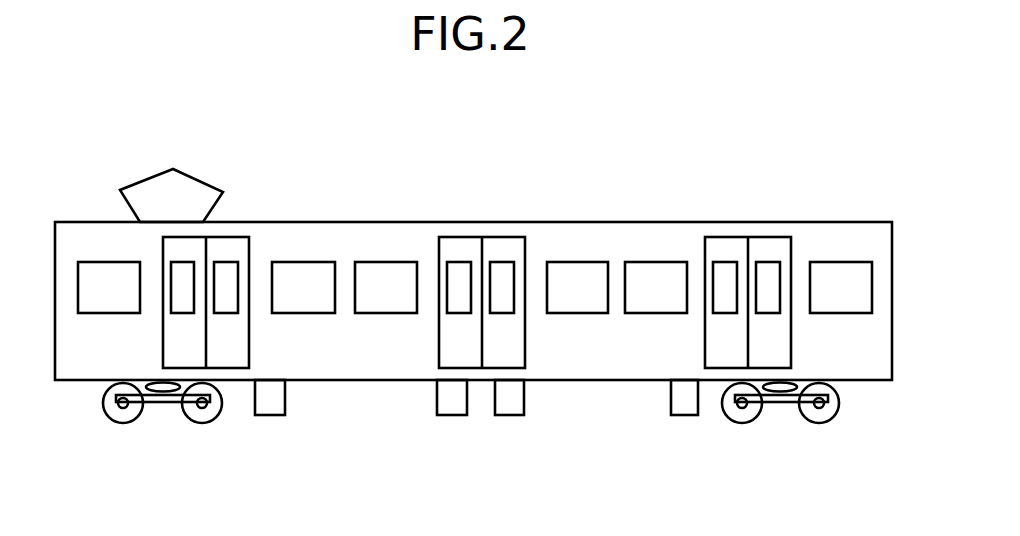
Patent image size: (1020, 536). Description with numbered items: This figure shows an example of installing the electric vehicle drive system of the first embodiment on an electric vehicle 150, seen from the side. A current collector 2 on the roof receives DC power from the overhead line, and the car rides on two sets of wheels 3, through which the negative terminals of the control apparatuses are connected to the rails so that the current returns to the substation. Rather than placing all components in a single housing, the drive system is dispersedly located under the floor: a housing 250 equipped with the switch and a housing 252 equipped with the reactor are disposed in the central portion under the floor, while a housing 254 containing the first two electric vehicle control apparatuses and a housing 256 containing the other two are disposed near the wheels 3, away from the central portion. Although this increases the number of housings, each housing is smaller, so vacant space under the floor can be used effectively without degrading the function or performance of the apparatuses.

The electric vehicle 150 is at (493, 123).
The current collector 2 is at (203, 183).
The wheels 3 is at (123, 423).
The housing 250 is at (452, 415).
The housing 252 is at (507, 415).
The housing 254 is at (270, 415).
The housing 256 is at (687, 415).